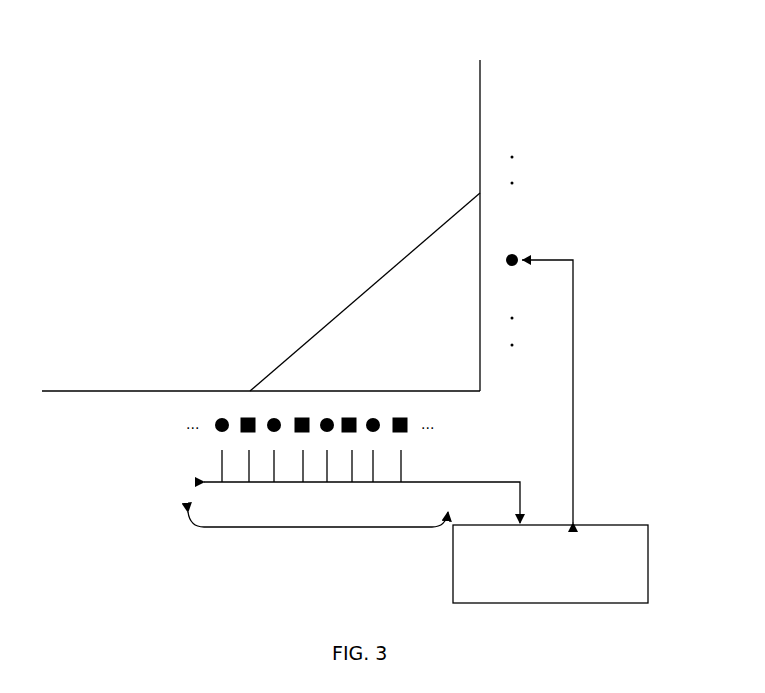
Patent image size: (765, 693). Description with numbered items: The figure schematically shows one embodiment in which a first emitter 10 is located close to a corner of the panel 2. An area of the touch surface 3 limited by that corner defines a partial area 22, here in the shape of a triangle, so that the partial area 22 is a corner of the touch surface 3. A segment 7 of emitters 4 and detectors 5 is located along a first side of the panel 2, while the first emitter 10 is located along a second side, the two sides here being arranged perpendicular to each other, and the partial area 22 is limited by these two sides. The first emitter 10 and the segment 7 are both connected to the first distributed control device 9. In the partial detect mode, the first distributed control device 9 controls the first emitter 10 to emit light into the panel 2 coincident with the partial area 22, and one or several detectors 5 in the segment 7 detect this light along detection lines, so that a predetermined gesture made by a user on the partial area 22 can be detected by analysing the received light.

The panel 2 is at (261, 296).
The touch surface 3 is at (435, 140).
The partial area 22 is at (415, 317).
The first emitter 10 is at (515, 248).
The emitters 4 is at (217, 420).
The detectors 5 is at (247, 417).
The segment 7 is at (318, 528).
The first distributed control device 9 is at (550, 564).